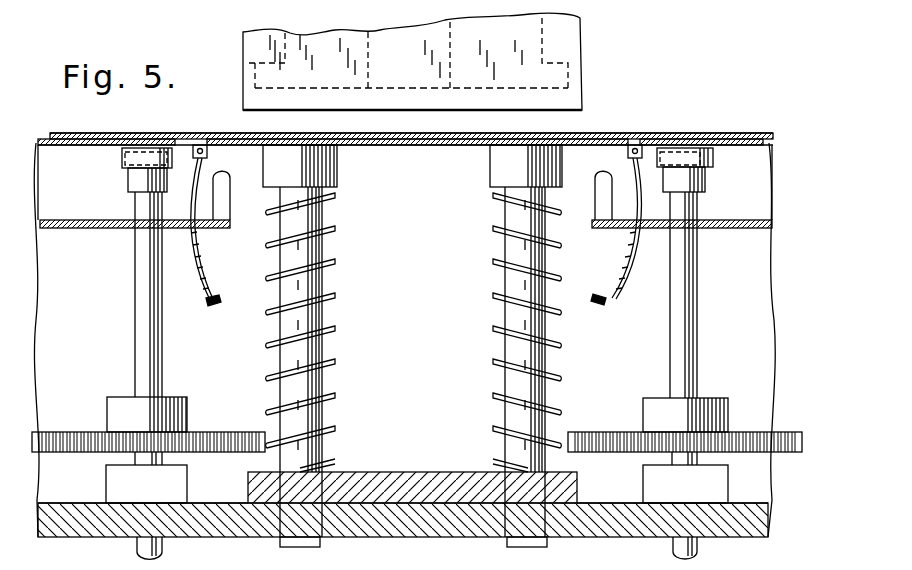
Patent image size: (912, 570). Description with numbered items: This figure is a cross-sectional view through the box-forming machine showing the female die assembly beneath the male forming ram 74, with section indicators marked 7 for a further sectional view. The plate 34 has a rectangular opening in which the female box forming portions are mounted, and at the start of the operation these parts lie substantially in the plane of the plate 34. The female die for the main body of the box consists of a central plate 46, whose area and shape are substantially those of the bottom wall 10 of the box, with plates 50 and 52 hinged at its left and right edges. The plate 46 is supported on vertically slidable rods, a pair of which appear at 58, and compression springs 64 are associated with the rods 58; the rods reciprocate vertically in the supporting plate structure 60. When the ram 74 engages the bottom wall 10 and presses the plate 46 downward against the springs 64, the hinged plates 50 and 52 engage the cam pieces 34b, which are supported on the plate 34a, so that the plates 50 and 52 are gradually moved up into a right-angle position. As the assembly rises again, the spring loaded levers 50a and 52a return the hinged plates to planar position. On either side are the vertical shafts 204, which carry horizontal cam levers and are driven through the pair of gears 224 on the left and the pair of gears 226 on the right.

The section line 7- 7 is at (417, 45).
The bottom wall 10 is at (447, 133).
The plate 34 is at (67, 145).
The plate 34a is at (75, 228).
The cam pieces 34b is at (232, 183).
The central plate 46 is at (408, 145).
The plate 50 is at (217, 133).
The spring loaded lever 50a is at (204, 154).
The plate 52 is at (627, 133).
The spring loaded lever 52a is at (631, 168).
The rods 58 is at (318, 312).
The supporting plate structure 60 is at (577, 488).
The compression springs 64 is at (320, 328).
The male forming ram 74 is at (575, 42).
The vertical shafts 204 is at (157, 337).
The gears 224 is at (72, 432).
The gears 226 is at (606, 432).